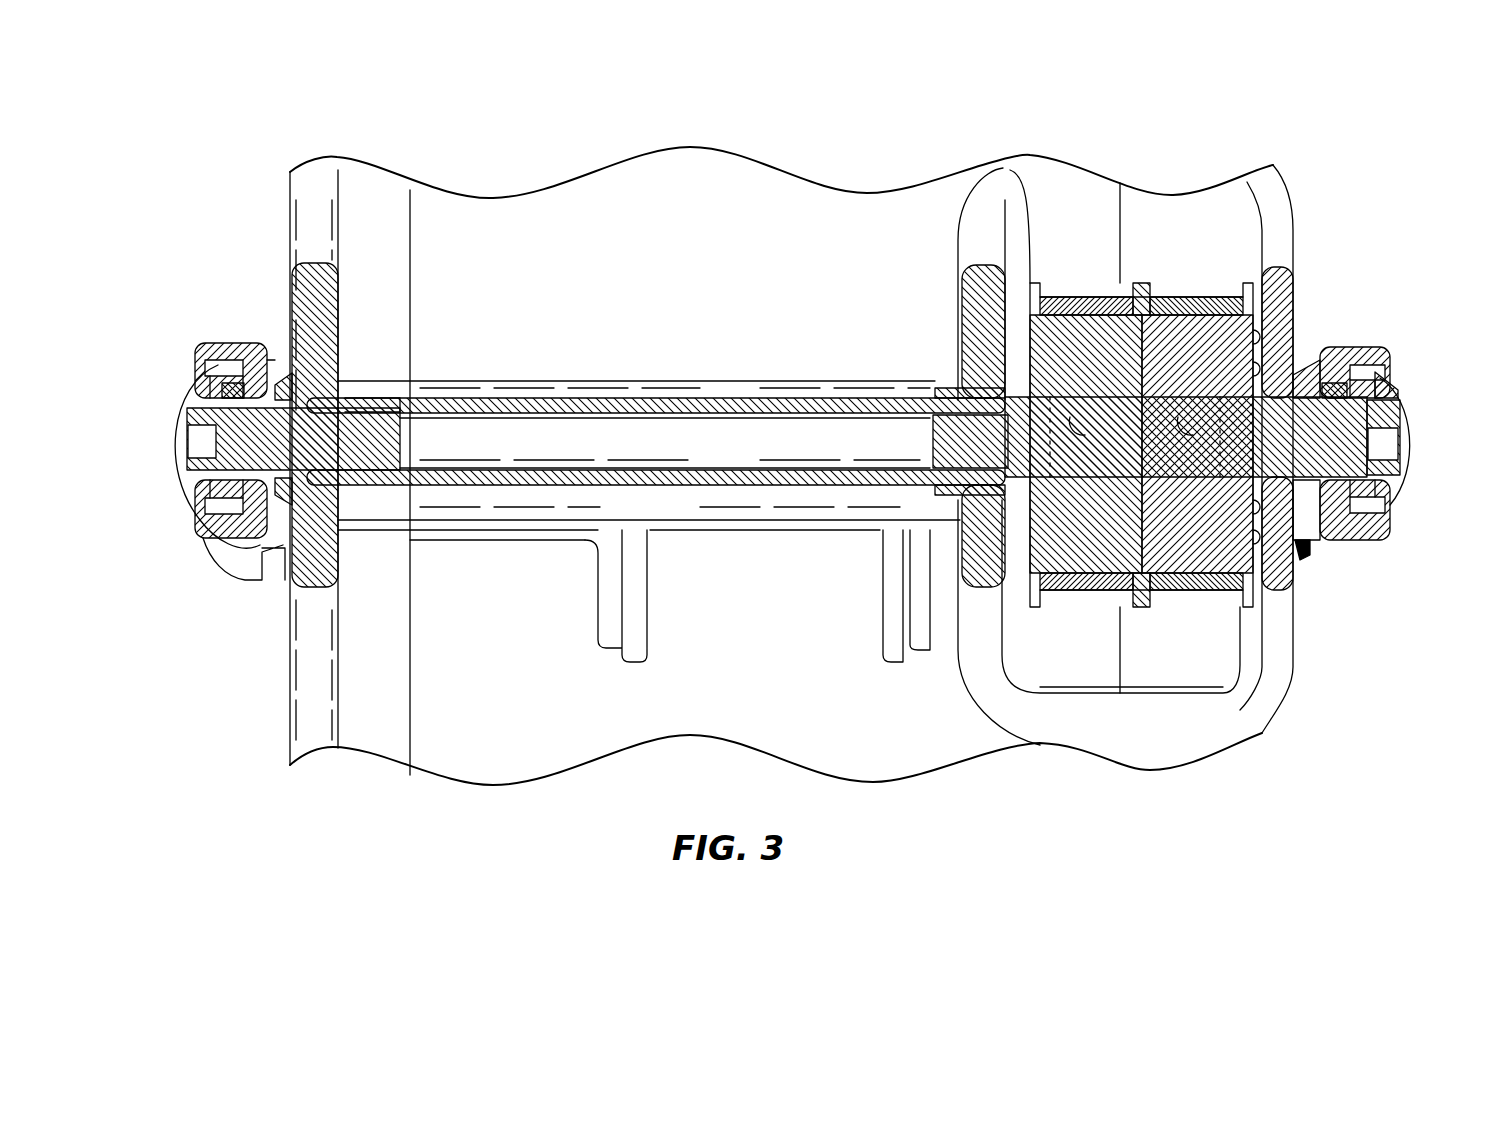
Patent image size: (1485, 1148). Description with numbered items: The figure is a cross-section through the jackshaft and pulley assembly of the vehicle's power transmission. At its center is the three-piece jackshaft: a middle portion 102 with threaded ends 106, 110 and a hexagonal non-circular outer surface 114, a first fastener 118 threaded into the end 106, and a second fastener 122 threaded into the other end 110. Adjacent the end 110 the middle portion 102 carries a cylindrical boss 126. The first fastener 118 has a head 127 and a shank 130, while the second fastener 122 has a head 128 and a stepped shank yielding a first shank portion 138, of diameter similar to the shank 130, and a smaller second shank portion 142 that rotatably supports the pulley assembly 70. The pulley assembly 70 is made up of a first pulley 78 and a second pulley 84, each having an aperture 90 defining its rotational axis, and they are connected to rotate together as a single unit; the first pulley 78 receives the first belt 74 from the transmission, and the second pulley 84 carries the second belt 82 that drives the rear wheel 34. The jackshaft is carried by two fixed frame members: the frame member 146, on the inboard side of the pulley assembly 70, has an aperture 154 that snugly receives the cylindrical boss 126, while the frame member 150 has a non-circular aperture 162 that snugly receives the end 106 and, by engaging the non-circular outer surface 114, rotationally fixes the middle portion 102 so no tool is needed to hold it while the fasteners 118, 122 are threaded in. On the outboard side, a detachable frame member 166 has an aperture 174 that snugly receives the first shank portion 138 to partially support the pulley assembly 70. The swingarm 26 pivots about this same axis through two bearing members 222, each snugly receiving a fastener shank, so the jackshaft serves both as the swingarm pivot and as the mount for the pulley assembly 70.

The rear swing arm 26 is at (1370, 347).
The rear wheel 34 is at (660, 270).
The pulley assembly 70 is at (1167, 632).
The first belt 74 is at (1083, 300).
The first pulley 78 is at (1000, 240).
The second belt 82 is at (1207, 300).
The second pulley 84 is at (1146, 285).
The aperture 90 is at (1136, 437).
The middle portion 102 is at (760, 402).
The threaded end 106 is at (402, 437).
The threaded end 110 is at (937, 425).
The non-circular outer surface 114 is at (513, 396).
The first fastener 118 is at (188, 405).
The second fastener 122 is at (1400, 410).
The cylindrical boss 126 is at (985, 510).
The head 127 is at (175, 483).
The head 128 is at (1398, 396).
The shank 130 is at (230, 552).
The first shank portion 138 is at (1355, 545).
The second shank portion 142 is at (1305, 556).
The frame member 146 is at (963, 265).
The frame member 150 is at (290, 240).
The aperture 154 is at (950, 390).
The non-circular aperture 162 is at (347, 410).
The detachable frame member 166 is at (1297, 248).
The aperture 174 is at (1388, 480).
The bearing member 222 is at (250, 387).